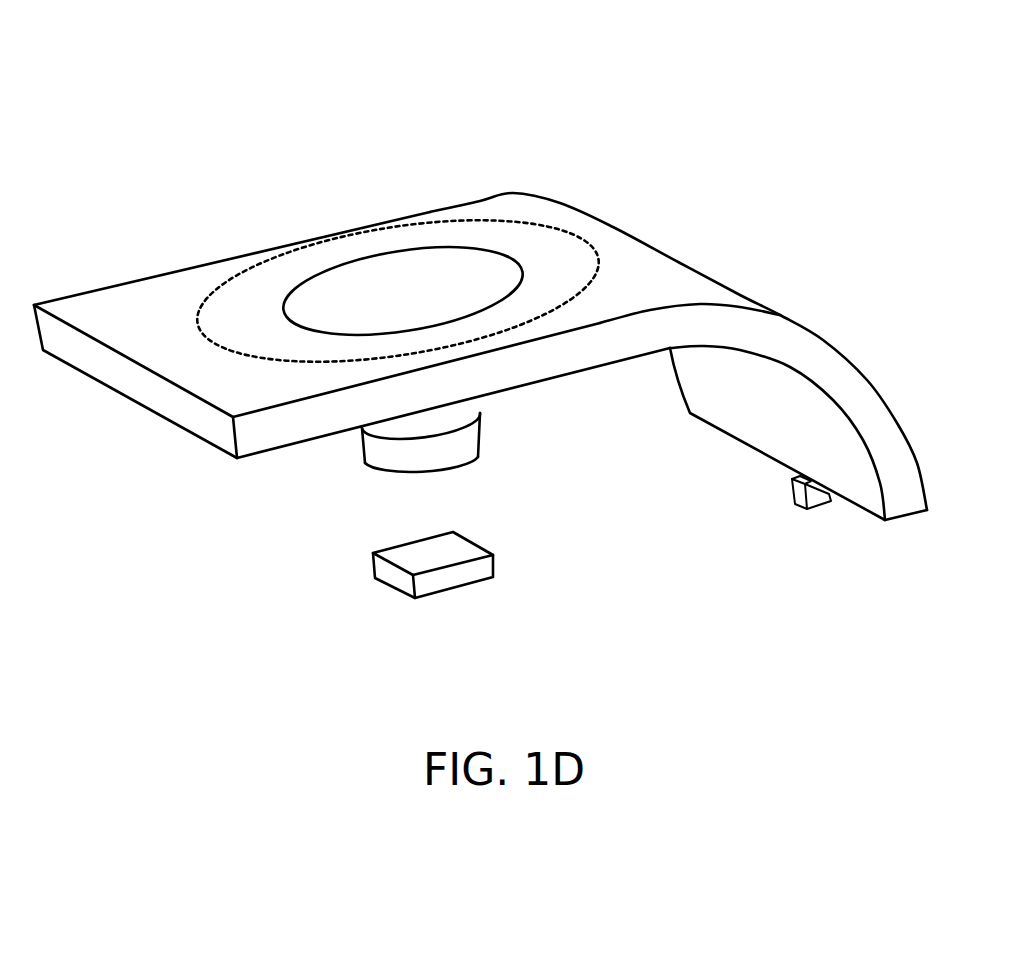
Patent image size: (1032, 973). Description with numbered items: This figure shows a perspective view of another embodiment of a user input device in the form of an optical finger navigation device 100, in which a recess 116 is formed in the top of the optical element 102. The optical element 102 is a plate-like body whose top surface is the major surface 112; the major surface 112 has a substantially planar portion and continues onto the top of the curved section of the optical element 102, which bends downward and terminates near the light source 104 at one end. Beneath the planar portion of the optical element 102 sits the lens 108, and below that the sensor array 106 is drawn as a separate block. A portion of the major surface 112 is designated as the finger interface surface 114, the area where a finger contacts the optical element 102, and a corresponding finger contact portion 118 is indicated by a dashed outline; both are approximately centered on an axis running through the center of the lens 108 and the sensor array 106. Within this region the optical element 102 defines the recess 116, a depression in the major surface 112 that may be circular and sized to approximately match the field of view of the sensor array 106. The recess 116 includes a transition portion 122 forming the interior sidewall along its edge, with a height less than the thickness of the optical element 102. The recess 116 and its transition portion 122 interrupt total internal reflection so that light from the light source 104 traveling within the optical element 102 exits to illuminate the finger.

The optical finger navigation device 100 is at (211, 68).
The optical element 102 is at (607, 345).
The light source 104 is at (809, 510).
The sensor array 106 is at (372, 566).
The lens 108 is at (481, 432).
The major surface 112 is at (626, 284).
The finger interface surface 114 is at (336, 320).
The recess 116 is at (401, 295).
The finger contact portion 118 is at (200, 310).
The transition portion 122 is at (377, 270).